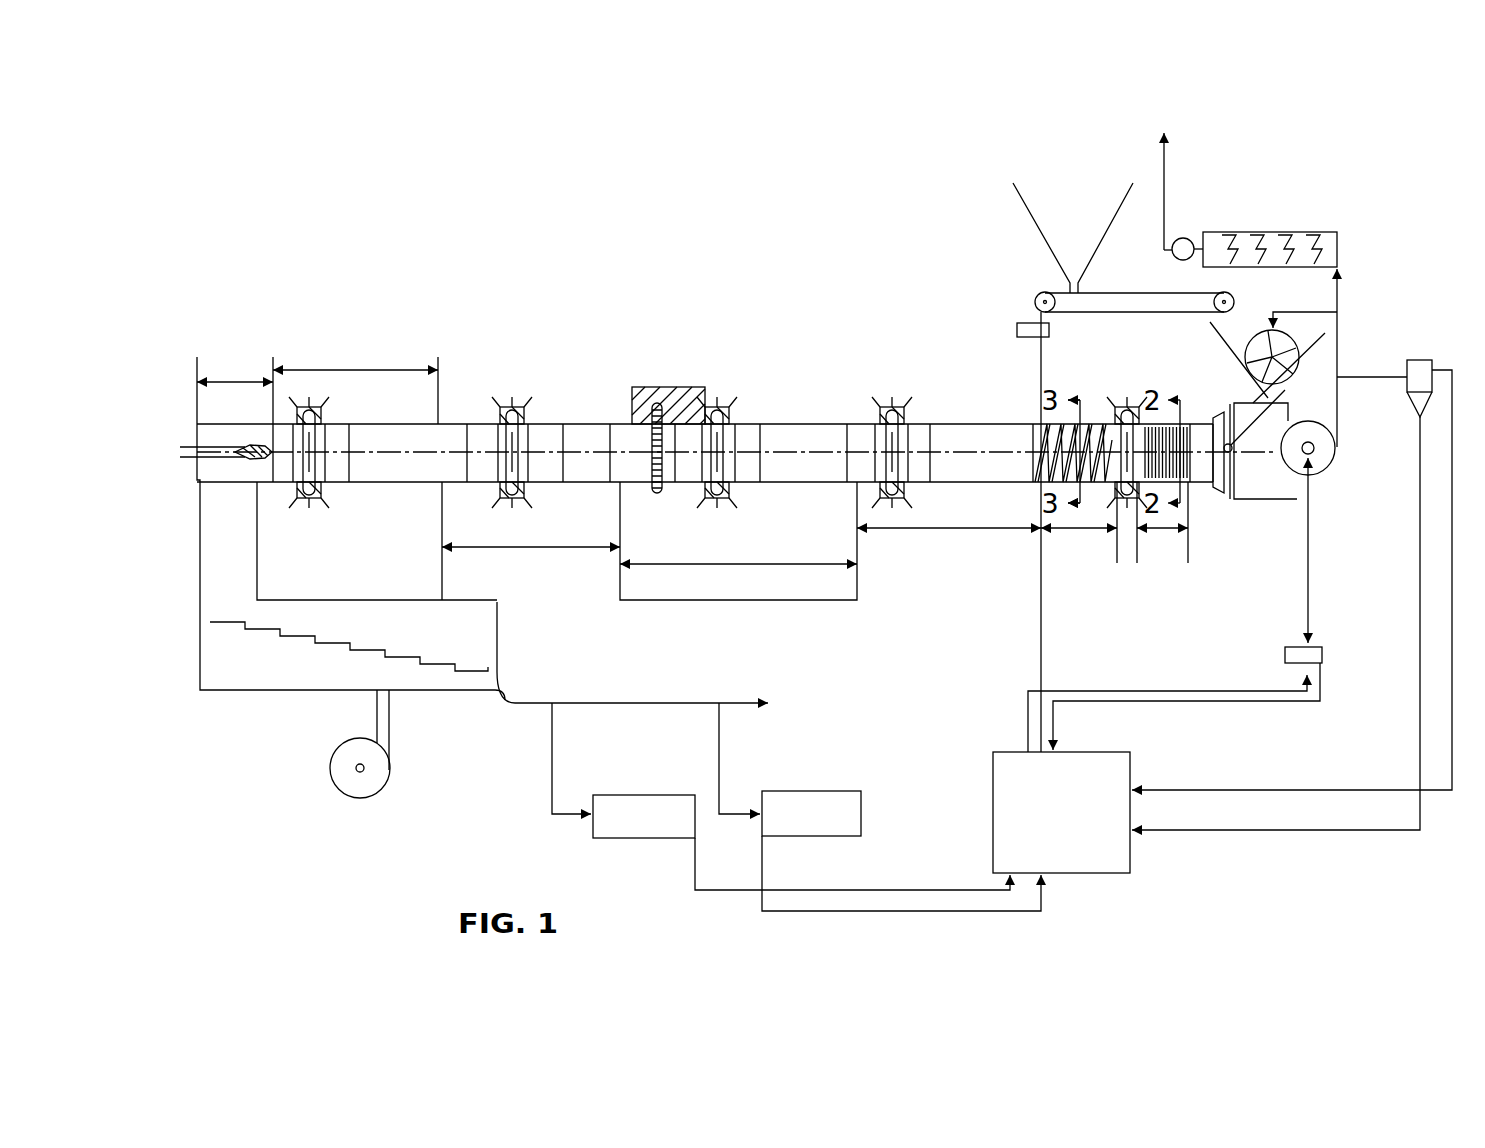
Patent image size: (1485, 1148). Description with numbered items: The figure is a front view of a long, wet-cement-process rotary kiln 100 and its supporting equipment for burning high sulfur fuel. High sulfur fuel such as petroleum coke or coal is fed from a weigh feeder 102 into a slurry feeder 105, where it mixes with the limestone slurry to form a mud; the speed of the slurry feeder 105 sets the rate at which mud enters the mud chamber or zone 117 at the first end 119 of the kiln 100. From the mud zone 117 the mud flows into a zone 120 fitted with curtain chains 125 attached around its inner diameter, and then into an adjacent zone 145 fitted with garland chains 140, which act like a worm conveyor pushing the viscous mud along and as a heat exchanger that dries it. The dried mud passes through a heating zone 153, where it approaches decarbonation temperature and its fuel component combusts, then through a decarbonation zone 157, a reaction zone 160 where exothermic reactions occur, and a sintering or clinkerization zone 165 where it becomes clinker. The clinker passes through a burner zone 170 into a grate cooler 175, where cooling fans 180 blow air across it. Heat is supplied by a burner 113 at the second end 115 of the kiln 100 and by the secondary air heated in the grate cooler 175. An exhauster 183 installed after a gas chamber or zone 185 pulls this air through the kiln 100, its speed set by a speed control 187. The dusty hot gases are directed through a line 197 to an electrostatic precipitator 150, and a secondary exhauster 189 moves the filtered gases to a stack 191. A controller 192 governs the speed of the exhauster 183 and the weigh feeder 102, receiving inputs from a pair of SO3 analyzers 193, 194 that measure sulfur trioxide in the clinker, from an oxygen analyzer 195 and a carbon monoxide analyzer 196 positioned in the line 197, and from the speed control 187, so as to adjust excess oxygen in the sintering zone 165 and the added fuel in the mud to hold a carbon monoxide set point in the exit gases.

The rotary kiln 100 is at (813, 348).
The weigh feeder 102 is at (1044, 292).
The slurry feeder 105 is at (1255, 340).
The burner 113 is at (190, 447).
The second end 115 is at (197, 490).
The mud chamber or zone 117 is at (1222, 495).
The first end 119 is at (1228, 412).
The chamber or zone 120 is at (1158, 530).
The curtain chains 125 is at (1190, 428).
The garland chains 140 is at (1110, 424).
The chamber or zone 145 is at (1075, 530).
The electrostatic precipitator 150 is at (1278, 232).
The heating chamber or zone 153 is at (945, 530).
The decarbonation zone 157 is at (735, 566).
The reaction chamber or zone 160 is at (545, 549).
The sintering or clinkerization zone 165 is at (353, 370).
The burner zone 170 is at (236, 382).
The grate cooler 175 is at (248, 692).
The cooling fans 180 is at (362, 798).
The exhauster 183 is at (1332, 468).
The gas chamber or zone 185 is at (1265, 500).
The speed control 187 is at (1285, 655).
The secondary exhauster 189 is at (1185, 238).
The stack 191 is at (1163, 162).
The controller 192 is at (993, 812).
The SO3 analyzer 193 is at (645, 795).
The SO3 analyzer 194 is at (815, 791).
The oxygen analyzer 195 is at (1420, 360).
The carbon monoxide analyzer 196 is at (1410, 388).
The line 197 is at (1340, 300).